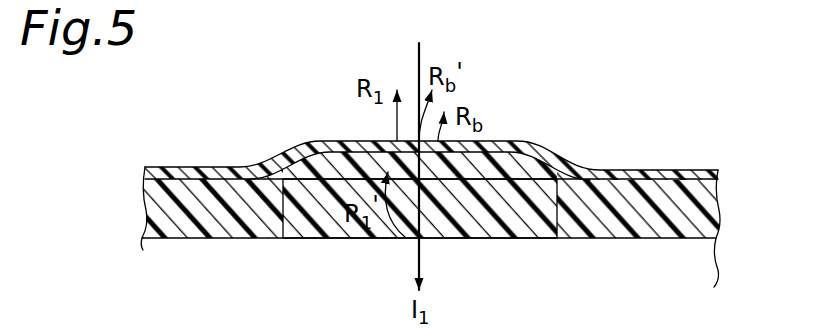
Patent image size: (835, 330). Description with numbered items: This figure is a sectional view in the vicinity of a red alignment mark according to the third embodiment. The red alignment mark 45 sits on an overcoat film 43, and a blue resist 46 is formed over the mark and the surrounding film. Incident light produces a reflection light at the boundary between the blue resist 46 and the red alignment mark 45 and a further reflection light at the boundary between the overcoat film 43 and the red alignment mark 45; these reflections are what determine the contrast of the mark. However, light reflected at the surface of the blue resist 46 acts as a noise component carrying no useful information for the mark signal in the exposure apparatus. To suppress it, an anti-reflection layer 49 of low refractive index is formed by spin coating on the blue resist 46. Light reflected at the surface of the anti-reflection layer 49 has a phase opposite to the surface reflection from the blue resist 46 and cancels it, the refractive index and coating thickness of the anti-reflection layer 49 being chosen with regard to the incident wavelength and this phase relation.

The overcoat film 43 is at (707, 263).
The red alignment mark 45 is at (522, 228).
The blue resist 46 is at (718, 208).
The anti-reflection layer 49 is at (718, 176).